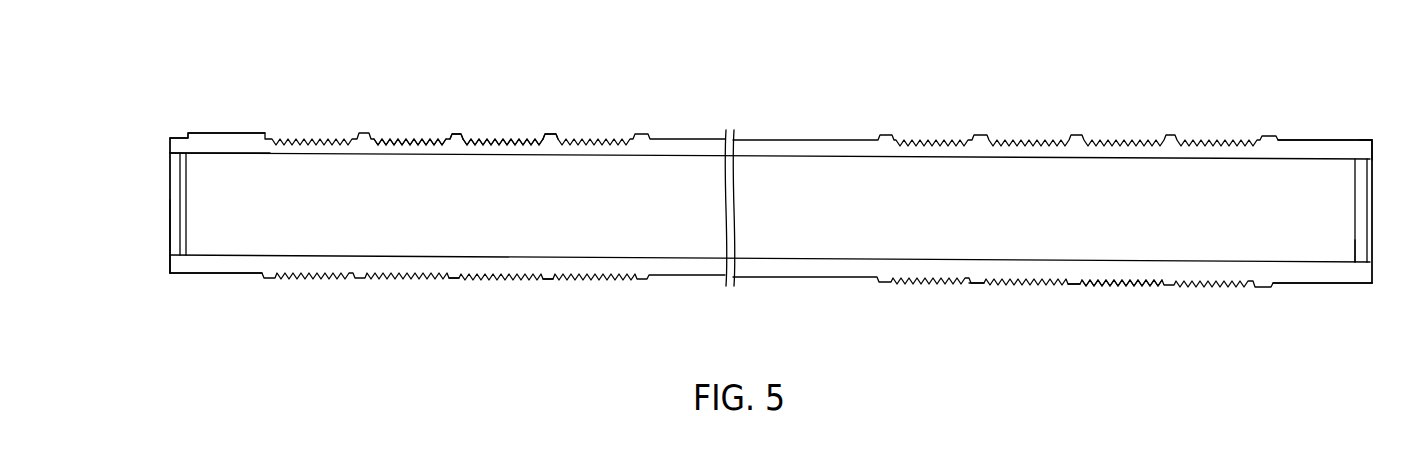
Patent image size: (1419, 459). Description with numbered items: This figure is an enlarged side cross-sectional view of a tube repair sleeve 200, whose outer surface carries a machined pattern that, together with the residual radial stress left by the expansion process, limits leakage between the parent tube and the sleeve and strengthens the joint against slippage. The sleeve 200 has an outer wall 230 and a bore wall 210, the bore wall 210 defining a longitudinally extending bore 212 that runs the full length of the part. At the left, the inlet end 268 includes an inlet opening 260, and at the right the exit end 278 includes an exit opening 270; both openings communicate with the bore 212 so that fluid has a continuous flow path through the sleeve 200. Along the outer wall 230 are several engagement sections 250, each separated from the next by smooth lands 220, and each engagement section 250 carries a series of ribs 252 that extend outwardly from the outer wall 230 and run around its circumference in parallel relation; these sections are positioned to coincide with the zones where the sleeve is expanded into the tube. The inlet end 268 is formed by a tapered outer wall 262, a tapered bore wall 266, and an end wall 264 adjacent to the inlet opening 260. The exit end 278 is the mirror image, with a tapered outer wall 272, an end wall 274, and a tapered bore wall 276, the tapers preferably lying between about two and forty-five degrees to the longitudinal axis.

The sleeve 200 is at (751, 196).
The bore wall 210 is at (1252, 162).
The bore 212 is at (1000, 226).
The lands 220 is at (1168, 137).
The outer wall 230 is at (793, 141).
The engagement sections 250 is at (510, 286).
The ribs 252 is at (425, 140).
The inlet opening 260 is at (165, 202).
The tapered outer wall 262 is at (178, 136).
The end wall 264 is at (170, 152).
The tapered bore wall 266 is at (172, 238).
The inlet end 268 is at (235, 285).
The exit opening 270 is at (1381, 234).
The tapered outer wall 272 is at (1363, 138).
The end wall 274 is at (1377, 148).
The tapered bore wall 276 is at (1358, 262).
The exit end 278 is at (1302, 302).